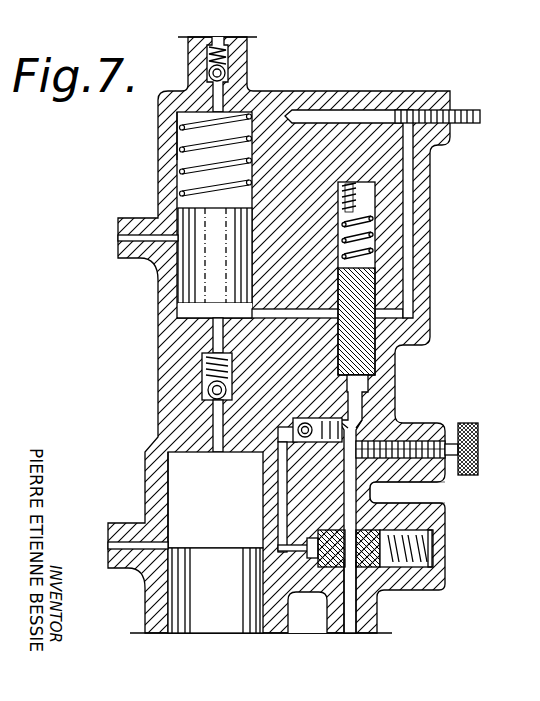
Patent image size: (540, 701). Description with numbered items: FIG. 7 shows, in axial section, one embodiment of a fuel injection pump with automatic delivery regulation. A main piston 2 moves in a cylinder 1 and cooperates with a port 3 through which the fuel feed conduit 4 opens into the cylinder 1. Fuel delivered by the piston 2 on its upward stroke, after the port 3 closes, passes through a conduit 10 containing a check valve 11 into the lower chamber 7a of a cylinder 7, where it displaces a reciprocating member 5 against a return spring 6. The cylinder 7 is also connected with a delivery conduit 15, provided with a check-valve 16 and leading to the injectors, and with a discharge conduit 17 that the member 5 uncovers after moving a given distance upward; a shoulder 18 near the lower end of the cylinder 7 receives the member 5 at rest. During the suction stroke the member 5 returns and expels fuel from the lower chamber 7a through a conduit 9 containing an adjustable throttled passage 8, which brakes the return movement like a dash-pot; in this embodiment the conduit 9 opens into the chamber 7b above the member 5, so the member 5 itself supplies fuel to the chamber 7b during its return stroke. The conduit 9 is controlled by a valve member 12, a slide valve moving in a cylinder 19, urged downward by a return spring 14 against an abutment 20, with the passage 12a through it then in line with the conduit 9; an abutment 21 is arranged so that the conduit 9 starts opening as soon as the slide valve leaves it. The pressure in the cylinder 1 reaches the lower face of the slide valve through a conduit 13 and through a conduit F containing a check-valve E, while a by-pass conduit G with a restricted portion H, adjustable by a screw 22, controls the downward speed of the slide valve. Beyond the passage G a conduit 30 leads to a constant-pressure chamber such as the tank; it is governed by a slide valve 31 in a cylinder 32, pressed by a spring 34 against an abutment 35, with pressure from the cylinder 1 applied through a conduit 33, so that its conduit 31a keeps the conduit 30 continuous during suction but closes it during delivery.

The cylinder 1 is at (265, 492).
The main piston 2 is at (210, 607).
The port 3 is at (170, 546).
The fuel feed conduit 4 is at (138, 530).
The reciprocating member 5 is at (220, 252).
The return spring 6 is at (190, 166).
The cylinder 7 is at (183, 190).
The lower chamber 7a is at (205, 313).
The chamber 7b is at (188, 133).
The throttled passage 8 is at (300, 109).
The conduit 9 is at (262, 112).
The conduit 10 is at (212, 438).
The check valve 11 is at (205, 390).
The valve member 12 is at (365, 300).
The passage 12a is at (372, 315).
The conduit 13 is at (362, 405).
The return spring 14 is at (375, 232).
The delivery conduit 15 is at (221, 92).
The check-valve 16 is at (211, 70).
The discharge conduit 17 is at (130, 238).
The shoulder 18 is at (190, 296).
The cylinder 19 is at (372, 248).
The abutment 20 is at (384, 395).
The abutment 21 is at (350, 212).
The screw 22 is at (479, 446).
The conduit 30 is at (352, 614).
The slide valve 31 is at (372, 569).
The conduit 31a is at (407, 492).
The cylinder 32 is at (430, 556).
The conduit 33 is at (282, 547).
The spring 34 is at (432, 542).
The abutment 35 is at (322, 568).
The check-valve E is at (266, 460).
The conduit F is at (343, 438).
The by-pass conduit G is at (394, 455).
The restricted portion H is at (352, 455).